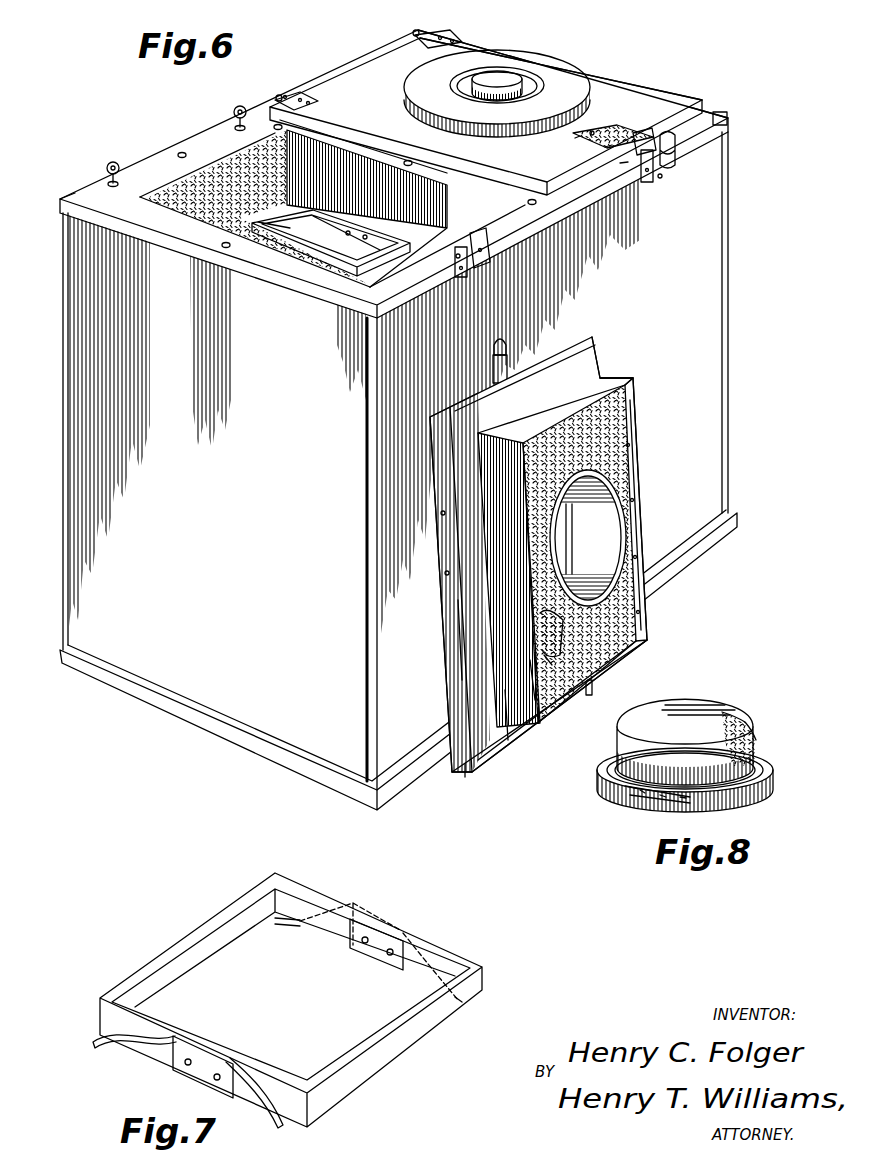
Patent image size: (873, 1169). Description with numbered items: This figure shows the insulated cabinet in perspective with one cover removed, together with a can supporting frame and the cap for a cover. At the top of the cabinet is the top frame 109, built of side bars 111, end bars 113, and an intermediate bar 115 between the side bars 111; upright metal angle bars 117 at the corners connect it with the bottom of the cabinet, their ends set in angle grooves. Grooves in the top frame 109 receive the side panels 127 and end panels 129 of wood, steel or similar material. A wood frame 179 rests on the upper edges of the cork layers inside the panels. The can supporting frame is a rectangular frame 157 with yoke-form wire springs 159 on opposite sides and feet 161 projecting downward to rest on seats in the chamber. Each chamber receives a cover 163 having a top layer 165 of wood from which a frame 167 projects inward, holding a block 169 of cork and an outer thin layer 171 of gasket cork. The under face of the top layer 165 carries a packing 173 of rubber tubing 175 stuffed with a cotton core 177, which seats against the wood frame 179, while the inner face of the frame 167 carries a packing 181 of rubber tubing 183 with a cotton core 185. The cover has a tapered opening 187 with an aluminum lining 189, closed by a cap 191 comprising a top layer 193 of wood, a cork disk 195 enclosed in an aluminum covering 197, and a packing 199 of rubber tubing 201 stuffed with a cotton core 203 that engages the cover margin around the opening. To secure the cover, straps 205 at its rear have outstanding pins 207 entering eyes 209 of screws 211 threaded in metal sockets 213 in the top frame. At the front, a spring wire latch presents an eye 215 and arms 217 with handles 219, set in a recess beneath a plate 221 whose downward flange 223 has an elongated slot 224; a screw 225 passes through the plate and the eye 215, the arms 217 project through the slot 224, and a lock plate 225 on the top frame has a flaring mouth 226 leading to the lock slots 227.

In FIG. 6, the top frame 109 is at (293, 286).
In FIG. 6, the side bars 111 is at (213, 135).
In FIG. 6, the end bars 113 is at (340, 305).
In FIG. 6, the intermediate bar 115 is at (312, 135).
In FIG. 6, the upright metal angle bars 117 is at (68, 533).
In FIG. 6, the side panels 127 is at (638, 354).
In FIG. 6, the end panels 129 is at (398, 494).
In FIG. 6, the rectangular frame 157 is at (355, 262).
In FIG. 7, the rectangular frame 157 is at (377, 1066).
In FIG. 7, the wire springs 159 is at (411, 935).
In FIG. 7, the feet 161 is at (287, 923).
In FIG. 6, the cover 163 is at (632, 91).
In FIG. 6, the top layer 165 is at (583, 341).
In FIG. 6, the frame 167 is at (590, 381).
In FIG. 6, the block 169 is at (548, 660).
In FIG. 6, the outer thin layer 171 is at (548, 678).
In FIG. 6, the packing 173 is at (463, 637).
In FIG. 6, the rubber tubing 175 is at (540, 700).
In FIG. 6, the cotton core 177 is at (470, 766).
In FIG. 6, the wood frame 179 is at (178, 168).
In FIG. 6, the packing 181 is at (632, 437).
In FIG. 6, the rubber tubing 183 is at (636, 466).
In FIG. 6, the cotton core 185 is at (638, 490).
In FIG. 6, the tapered opening 187 is at (561, 548).
In FIG. 6, the aluminum lining 189 is at (610, 553).
In FIG. 6, the cap 191 is at (548, 71).
In FIG. 8, the cap 191 is at (723, 702).
In FIG. 8, the top layer 193 is at (770, 783).
In FIG. 8, the cork disk 195 is at (753, 732).
In FIG. 8, the aluminum covering 197 is at (718, 720).
In FIG. 8, the packing 199 is at (605, 785).
In FIG. 8, the rubber tubing 201 is at (630, 788).
In FIG. 8, the cotton core 203 is at (660, 798).
In FIG. 6, the straps 205 is at (307, 108).
In FIG. 6, the pins 207 is at (420, 26).
In FIG. 6, the eyes 209 is at (238, 110).
In FIG. 6, the screws 211 is at (436, 38).
In FIG. 6, the metal sockets 213 is at (77, 197).
In FIG. 6, the eye 215 is at (578, 140).
In FIG. 6, the arms 217 is at (608, 147).
In FIG. 6, the handles 219 is at (672, 155).
In FIG. 6, the plate 221 is at (633, 124).
In FIG. 6, the flange 223 is at (648, 136).
In FIG. 6, the elongated slot 224 is at (623, 165).
In FIG. 6, the screw 225 is at (592, 131).
In FIG. 6, the flaring mouth 226 is at (728, 122).
In FIG. 6, the lock slots 227 is at (650, 183).